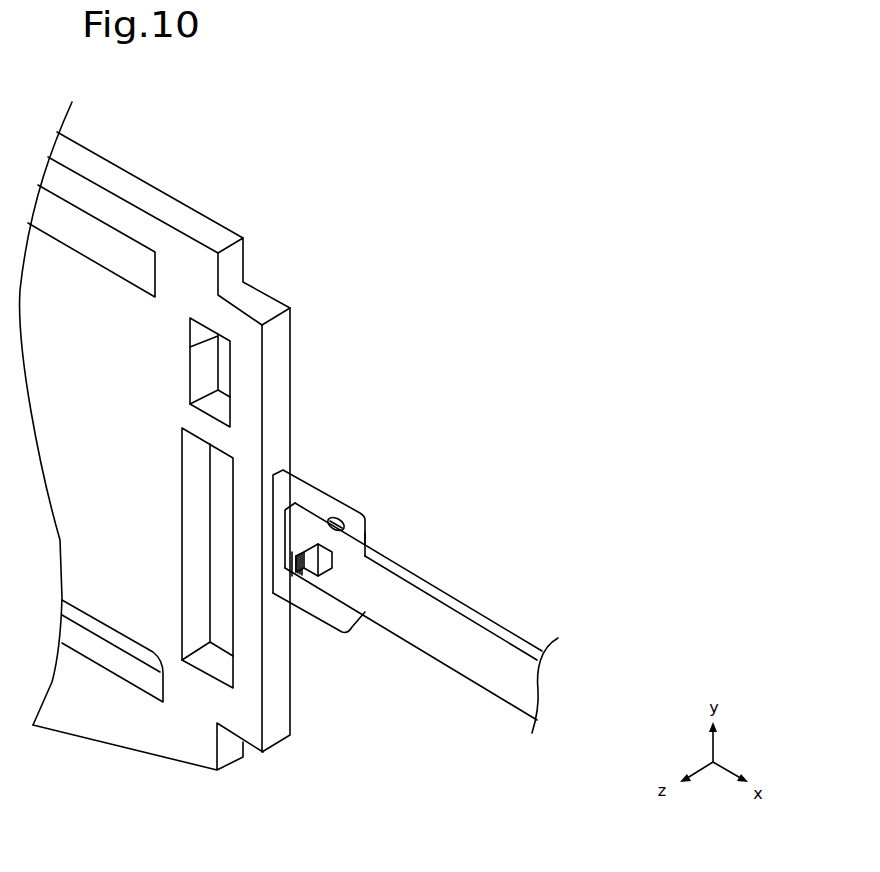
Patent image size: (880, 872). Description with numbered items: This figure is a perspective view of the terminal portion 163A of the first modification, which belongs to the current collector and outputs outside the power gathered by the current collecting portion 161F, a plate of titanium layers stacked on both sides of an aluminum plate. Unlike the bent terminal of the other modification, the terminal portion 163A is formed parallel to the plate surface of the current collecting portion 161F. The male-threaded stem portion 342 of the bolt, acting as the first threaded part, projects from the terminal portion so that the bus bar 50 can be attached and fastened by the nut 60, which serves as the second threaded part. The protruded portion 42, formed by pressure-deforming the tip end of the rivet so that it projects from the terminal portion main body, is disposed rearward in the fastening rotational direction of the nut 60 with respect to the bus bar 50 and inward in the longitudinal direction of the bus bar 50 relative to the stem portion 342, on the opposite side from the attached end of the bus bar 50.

The current collecting portion 161F is at (184, 268).
The nut 60 is at (305, 533).
The terminal portion 163A is at (415, 579).
The protruded portion 42 is at (366, 537).
The bus bar 50 is at (450, 627).
The stem portion 342 is at (292, 563).